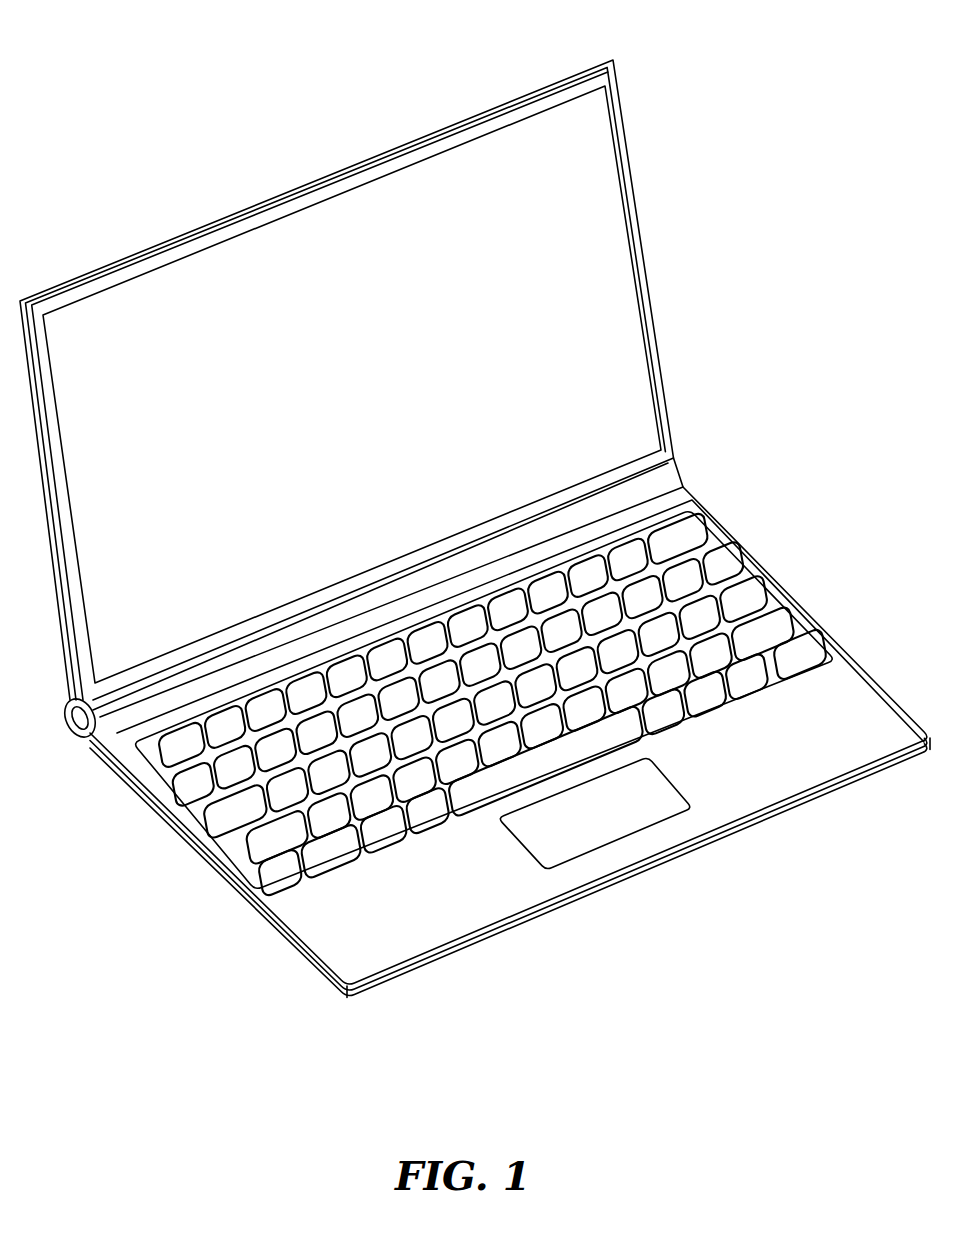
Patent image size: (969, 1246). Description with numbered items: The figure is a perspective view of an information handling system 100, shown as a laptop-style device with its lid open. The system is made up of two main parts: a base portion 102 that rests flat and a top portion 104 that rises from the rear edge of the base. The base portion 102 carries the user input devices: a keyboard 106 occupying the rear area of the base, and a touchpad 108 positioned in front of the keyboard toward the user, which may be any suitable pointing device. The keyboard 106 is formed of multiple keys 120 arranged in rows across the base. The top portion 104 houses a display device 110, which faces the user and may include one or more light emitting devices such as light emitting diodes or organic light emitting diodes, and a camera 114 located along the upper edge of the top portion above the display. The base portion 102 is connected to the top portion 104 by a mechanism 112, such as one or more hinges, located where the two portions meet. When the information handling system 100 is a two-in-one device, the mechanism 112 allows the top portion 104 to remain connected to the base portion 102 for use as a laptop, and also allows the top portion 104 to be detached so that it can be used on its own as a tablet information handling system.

The information handling system 100 is at (665, 68).
The base portion 102 is at (462, 900).
The top portion 104 is at (637, 232).
The keyboard 106 is at (850, 644).
The touchpad 108 is at (640, 822).
The display device 110 is at (625, 296).
The mechanism 112 is at (668, 478).
The camera 114 is at (336, 196).
The keys 120 is at (388, 786).